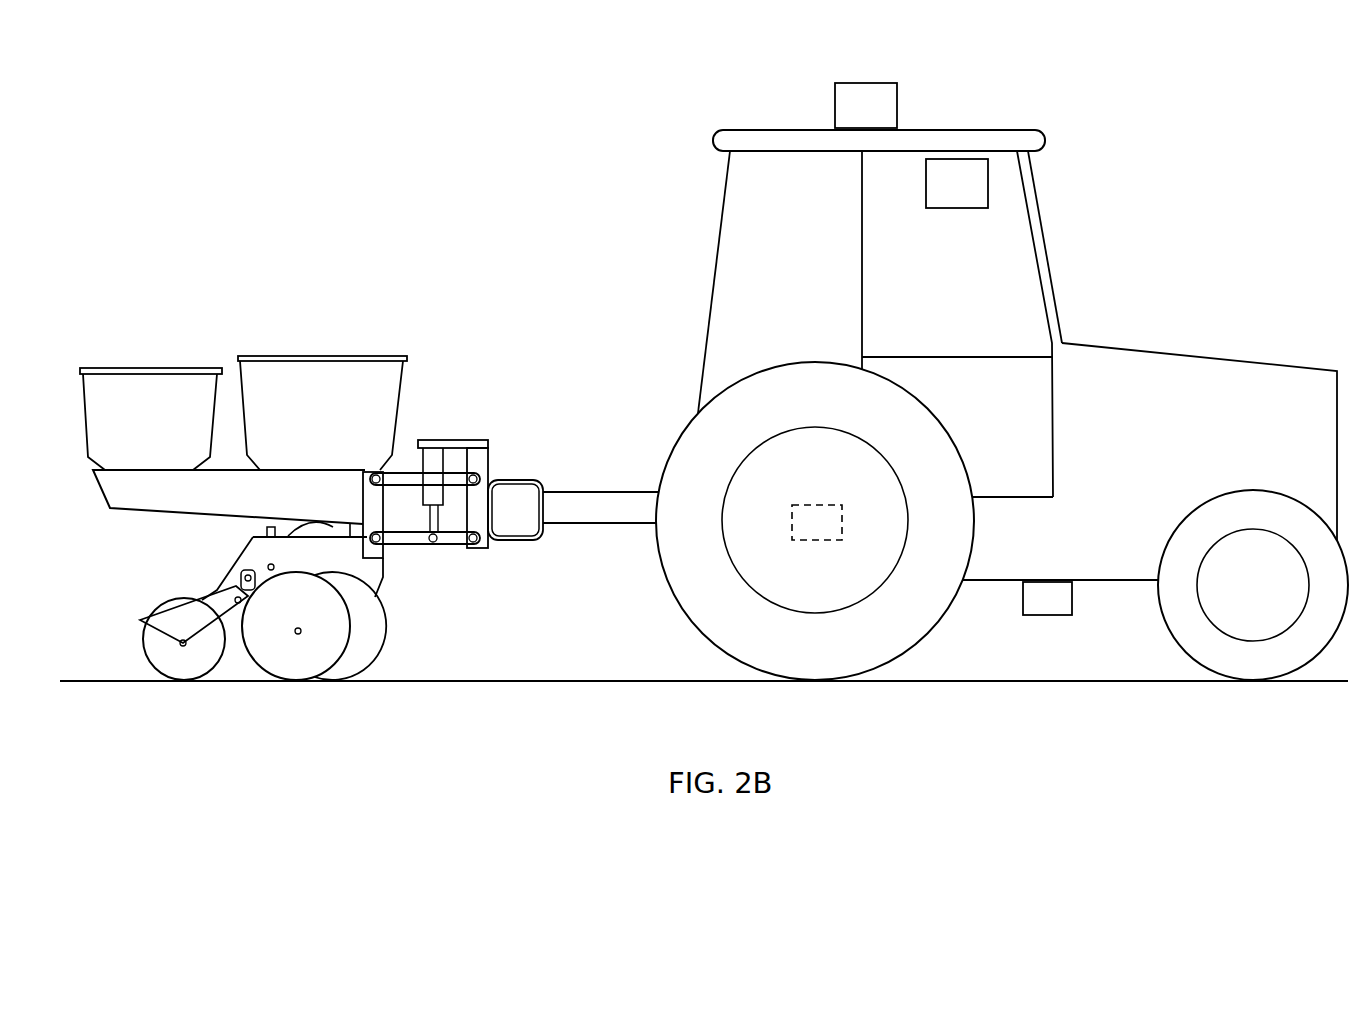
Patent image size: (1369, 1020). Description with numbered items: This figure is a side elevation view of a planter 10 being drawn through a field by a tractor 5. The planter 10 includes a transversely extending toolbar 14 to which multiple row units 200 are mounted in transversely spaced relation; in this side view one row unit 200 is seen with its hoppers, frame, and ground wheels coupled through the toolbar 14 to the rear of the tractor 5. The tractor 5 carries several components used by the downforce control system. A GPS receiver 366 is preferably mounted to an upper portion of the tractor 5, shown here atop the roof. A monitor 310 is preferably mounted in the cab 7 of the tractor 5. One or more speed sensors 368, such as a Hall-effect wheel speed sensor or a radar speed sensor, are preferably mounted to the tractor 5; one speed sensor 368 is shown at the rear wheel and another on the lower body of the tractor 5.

The tractor 5 is at (1207, 197).
The cab 7 is at (1025, 315).
The planter 10 is at (648, 398).
The toolbar 14 is at (512, 480).
The row unit 200 is at (437, 391).
The monitor 310 is at (941, 193).
The GPS receiver 366 is at (850, 115).
The speed sensor 368 is at (801, 531).